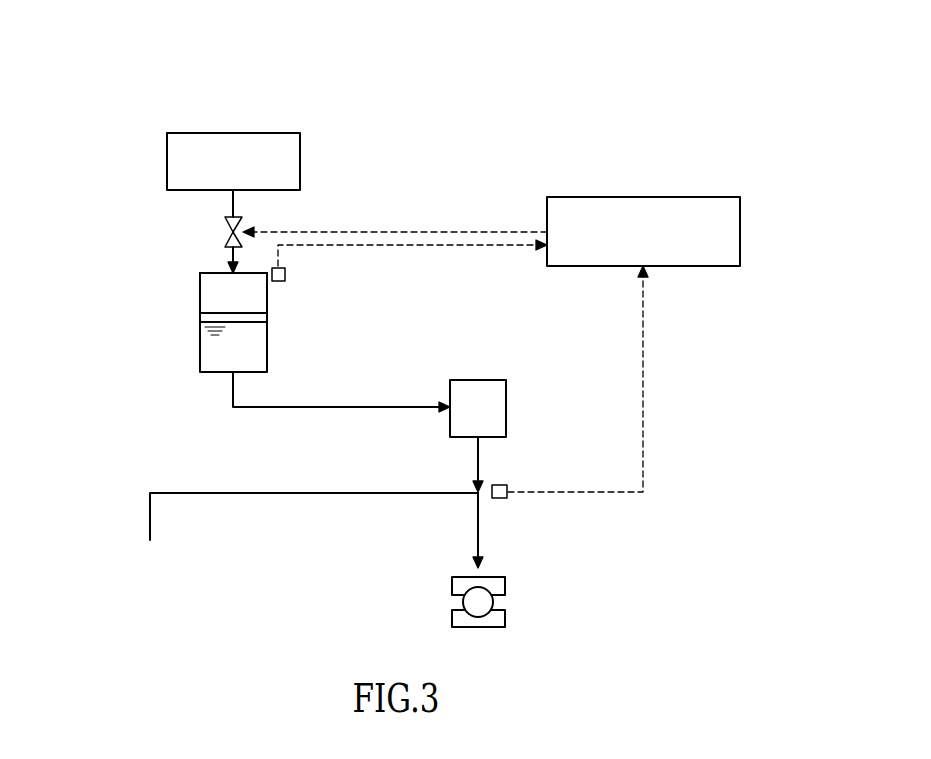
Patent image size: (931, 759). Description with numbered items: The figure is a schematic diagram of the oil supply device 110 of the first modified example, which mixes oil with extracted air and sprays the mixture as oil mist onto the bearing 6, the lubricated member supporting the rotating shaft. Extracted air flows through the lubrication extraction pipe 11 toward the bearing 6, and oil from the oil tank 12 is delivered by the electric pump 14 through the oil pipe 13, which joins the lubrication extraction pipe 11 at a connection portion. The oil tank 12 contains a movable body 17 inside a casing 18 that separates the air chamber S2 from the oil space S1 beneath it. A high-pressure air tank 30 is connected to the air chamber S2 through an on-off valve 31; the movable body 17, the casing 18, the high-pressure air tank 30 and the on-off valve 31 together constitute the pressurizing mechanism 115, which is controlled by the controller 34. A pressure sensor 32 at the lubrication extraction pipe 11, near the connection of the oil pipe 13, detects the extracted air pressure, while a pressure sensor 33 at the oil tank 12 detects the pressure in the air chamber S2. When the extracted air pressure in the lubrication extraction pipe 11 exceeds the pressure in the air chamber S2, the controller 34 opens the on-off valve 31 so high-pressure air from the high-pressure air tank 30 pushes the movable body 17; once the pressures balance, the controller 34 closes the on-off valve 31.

The oil supply device 110 is at (566, 125).
The pressurizing mechanism 115 is at (148, 296).
The high-pressure air tank 30 is at (300, 157).
The on-off valve 31 is at (228, 232).
The casing 18 is at (212, 273).
The pressure sensor 33 is at (285, 274).
The movable body 17 is at (252, 313).
The air chamber S2 is at (213, 297).
The oil tank 12 is at (192, 348).
The lower space S1 is at (220, 365).
The electric pump 14 is at (476, 380).
The oil pipe 13 is at (478, 452).
The pressure sensor 32 is at (497, 498).
The lubrication extraction pipe 11 is at (308, 493).
The bearing 6 is at (505, 585).
The controller 34 is at (740, 234).